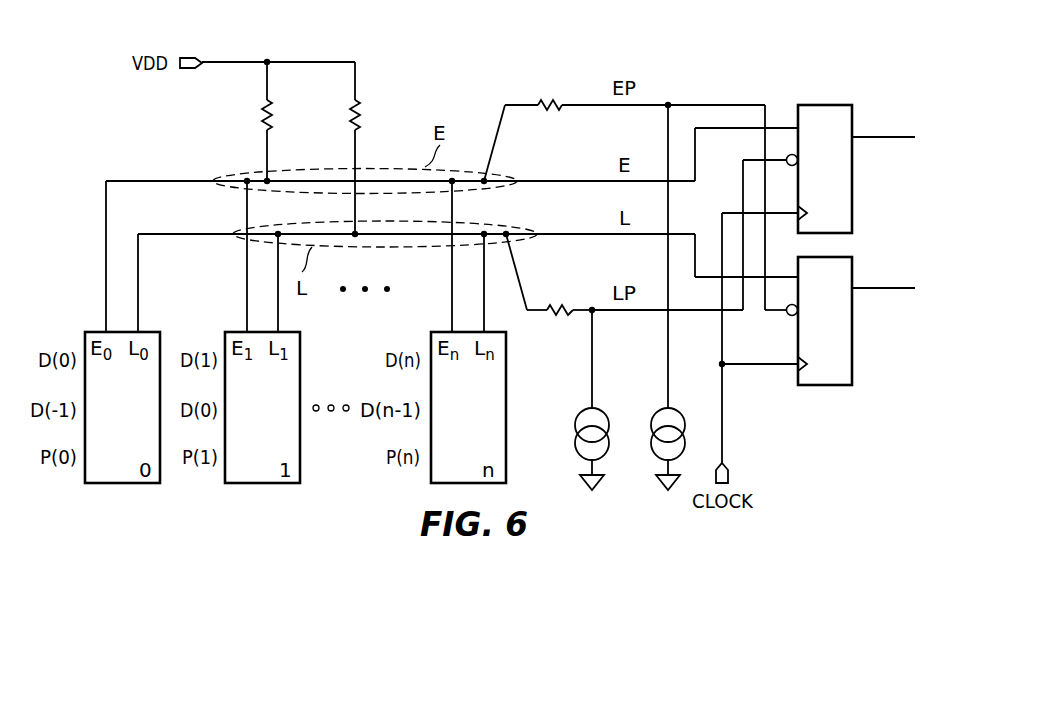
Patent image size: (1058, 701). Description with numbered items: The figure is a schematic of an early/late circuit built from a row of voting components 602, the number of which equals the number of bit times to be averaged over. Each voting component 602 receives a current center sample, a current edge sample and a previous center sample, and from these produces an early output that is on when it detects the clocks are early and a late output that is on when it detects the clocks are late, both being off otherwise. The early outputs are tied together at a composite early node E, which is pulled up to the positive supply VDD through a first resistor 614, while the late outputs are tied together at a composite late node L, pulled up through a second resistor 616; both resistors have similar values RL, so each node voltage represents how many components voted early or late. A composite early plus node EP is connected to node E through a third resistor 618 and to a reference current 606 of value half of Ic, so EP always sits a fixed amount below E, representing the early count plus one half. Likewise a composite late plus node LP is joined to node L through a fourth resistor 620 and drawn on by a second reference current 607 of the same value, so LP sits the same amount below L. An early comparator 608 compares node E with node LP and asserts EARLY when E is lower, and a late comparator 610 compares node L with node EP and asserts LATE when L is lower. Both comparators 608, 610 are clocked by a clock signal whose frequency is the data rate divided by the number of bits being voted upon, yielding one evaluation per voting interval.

The voting component 602 is at (676, 62).
The reference current 606 is at (651, 450).
The reference current 607 is at (576, 450).
The early comparator 608 is at (826, 104).
The late comparator 610 is at (826, 387).
The first resistor 614 is at (262, 112).
The second resistor 616 is at (350, 110).
The third resistor 618 is at (549, 112).
The fourth resistor 620 is at (555, 318).